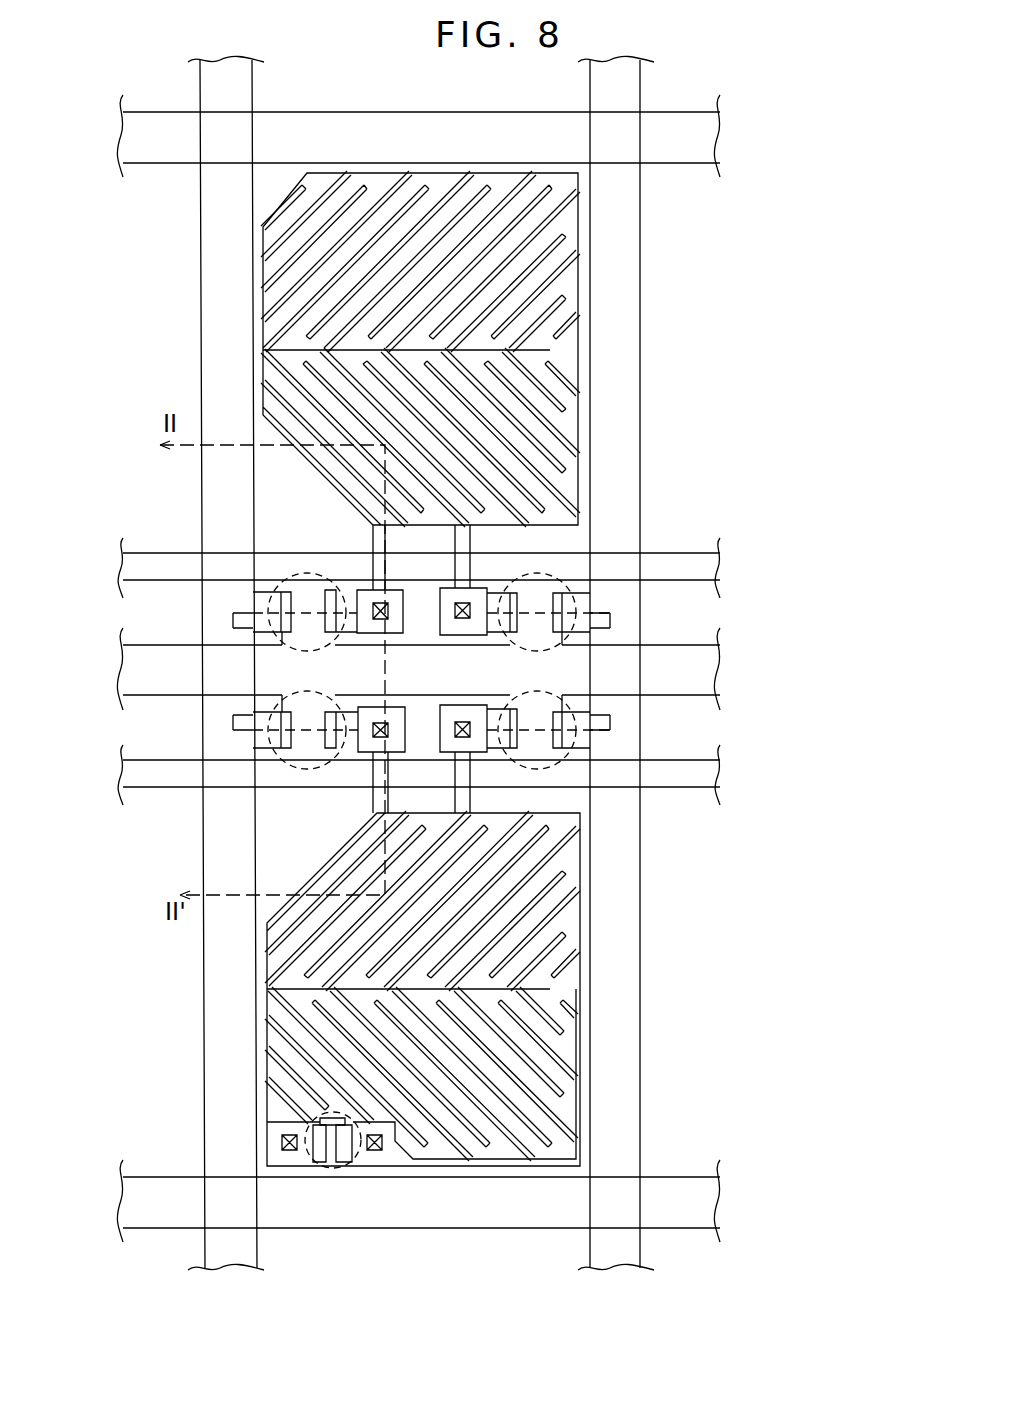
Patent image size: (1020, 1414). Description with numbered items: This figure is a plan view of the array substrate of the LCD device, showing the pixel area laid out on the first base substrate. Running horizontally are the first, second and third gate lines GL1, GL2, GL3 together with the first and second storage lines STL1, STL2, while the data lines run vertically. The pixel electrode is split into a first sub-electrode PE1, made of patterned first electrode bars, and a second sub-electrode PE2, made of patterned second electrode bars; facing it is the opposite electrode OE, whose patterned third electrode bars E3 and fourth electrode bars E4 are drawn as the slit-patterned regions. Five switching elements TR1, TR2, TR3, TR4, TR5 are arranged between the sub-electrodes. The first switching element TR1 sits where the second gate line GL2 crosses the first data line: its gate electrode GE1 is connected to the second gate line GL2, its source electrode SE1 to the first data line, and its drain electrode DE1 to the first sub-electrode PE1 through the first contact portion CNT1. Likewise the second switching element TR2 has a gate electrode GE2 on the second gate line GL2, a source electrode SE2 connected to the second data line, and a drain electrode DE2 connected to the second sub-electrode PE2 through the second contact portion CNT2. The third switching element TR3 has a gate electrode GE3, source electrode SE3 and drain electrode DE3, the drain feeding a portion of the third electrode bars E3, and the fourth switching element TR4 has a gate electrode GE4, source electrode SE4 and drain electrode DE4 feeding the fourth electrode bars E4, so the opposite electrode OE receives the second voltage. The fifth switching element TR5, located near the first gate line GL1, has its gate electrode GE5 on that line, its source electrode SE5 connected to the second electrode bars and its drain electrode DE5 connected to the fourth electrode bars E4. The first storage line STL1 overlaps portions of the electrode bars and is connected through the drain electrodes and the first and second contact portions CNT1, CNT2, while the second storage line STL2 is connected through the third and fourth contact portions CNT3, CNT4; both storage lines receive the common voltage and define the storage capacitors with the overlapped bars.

The first gate line GL1 is at (163, 1217).
The second gate line GL2 is at (137, 674).
The third gate line GL3 is at (137, 129).
The first storage line STL1 is at (705, 567).
The second storage line STL2 is at (705, 771).
The first sub-electrode PE1 is at (263, 349).
The second sub-electrode PE2 is at (267, 991).
The third electrode bars E3 is at (499, 380).
The fourth electrode bars E4 is at (497, 836).
The opposite electrode OE is at (523, 668).
The first switching element TR1 is at (223, 551).
The second switching element TR2 is at (222, 795).
The third switching element TR3 is at (613, 551).
The fourth switching element TR4 is at (616, 798).
The fifth switching element TR5 is at (358, 1229).
The source electrode SE1 is at (280, 597).
The gate electrode GE1 is at (307, 605).
The drain electrode DE1 is at (340, 600).
The source electrode SE2 is at (280, 746).
The gate electrode GE2 is at (307, 742).
The drain electrode DE2 is at (340, 745).
The source electrode SE3 is at (560, 594).
The gate electrode GE3 is at (537, 605).
The drain electrode DE3 is at (507, 603).
The source electrode SE4 is at (560, 748).
The gate electrode GE4 is at (537, 744).
The drain electrode DE4 is at (507, 746).
The source electrode SE5 is at (318, 1165).
The gate electrode GE5 is at (333, 1165).
The drain electrode DE5 is at (348, 1165).
The first contact portion CNT1 is at (373, 620).
The second contact portion CNT2 is at (373, 723).
The third contact portion CNT3 is at (470, 618).
The fourth contact portion CNT4 is at (470, 722).